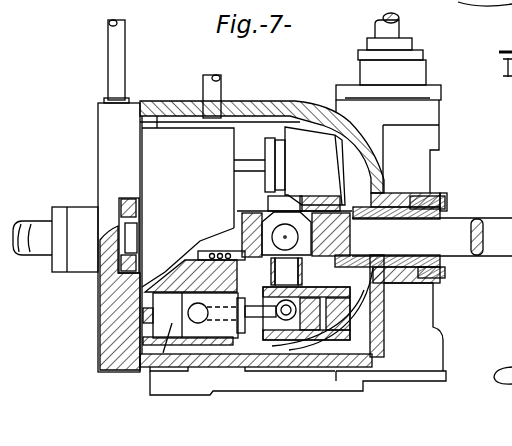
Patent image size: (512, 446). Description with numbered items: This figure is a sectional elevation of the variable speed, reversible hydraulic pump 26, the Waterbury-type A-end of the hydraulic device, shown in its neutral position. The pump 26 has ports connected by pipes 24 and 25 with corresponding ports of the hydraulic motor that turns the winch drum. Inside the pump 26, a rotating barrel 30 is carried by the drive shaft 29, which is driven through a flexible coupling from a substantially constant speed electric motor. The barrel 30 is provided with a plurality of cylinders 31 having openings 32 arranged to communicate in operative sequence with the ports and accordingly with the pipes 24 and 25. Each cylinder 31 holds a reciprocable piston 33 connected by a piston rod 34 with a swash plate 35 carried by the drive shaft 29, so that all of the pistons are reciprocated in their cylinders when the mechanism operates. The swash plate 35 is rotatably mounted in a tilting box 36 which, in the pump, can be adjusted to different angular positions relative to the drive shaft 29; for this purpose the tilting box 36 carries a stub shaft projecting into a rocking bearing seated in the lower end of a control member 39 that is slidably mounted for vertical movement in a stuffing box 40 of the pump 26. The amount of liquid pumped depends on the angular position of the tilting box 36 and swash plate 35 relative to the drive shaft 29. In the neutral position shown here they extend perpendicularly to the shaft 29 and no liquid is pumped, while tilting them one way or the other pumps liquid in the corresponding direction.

The pipe 24 is at (24, 221).
The pipe 25 is at (42, 256).
The variable speed reversible hydraulic pump 26 is at (279, 110).
The drive shaft 29 is at (467, 218).
The rotating barrel 30 is at (188, 178).
The cylinder 31 is at (150, 372).
The opening 32 is at (143, 313).
The piston 33 is at (228, 338).
The piston rod 34 is at (257, 303).
The swash plate 35 is at (280, 335).
The tilting box 36 is at (315, 166).
The control member 39 is at (397, 31).
The stuffing box 40 is at (404, 72).